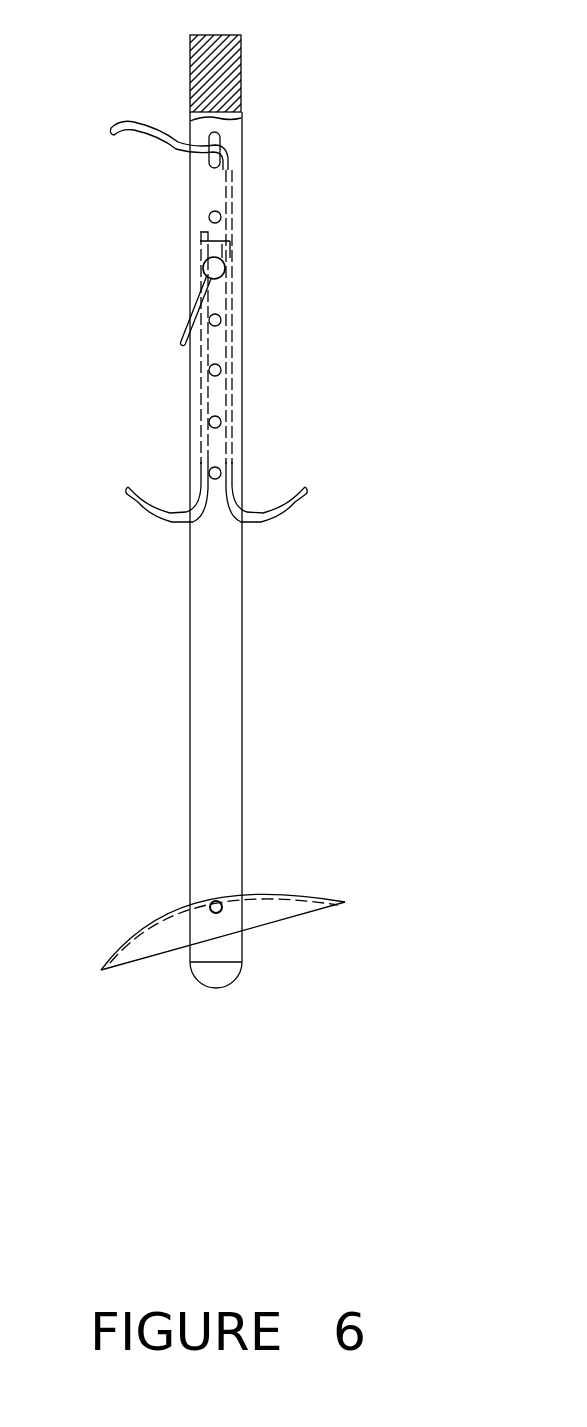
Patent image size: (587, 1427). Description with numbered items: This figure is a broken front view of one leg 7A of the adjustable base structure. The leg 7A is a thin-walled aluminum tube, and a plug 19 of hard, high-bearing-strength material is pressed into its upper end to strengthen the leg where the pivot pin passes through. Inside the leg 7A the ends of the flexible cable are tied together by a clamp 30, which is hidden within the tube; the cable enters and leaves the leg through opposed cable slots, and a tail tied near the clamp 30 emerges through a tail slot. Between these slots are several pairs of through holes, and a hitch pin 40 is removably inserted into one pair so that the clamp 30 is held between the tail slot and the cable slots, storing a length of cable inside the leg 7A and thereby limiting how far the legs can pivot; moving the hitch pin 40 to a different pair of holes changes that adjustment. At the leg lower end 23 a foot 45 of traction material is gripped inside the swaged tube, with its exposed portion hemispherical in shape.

The plug 19 is at (222, 70).
The clamp 30 is at (228, 244).
The hitch pin 40 is at (180, 345).
The leg 7A is at (218, 580).
The leg lower end 23 is at (228, 948).
The foot 45 is at (225, 977).